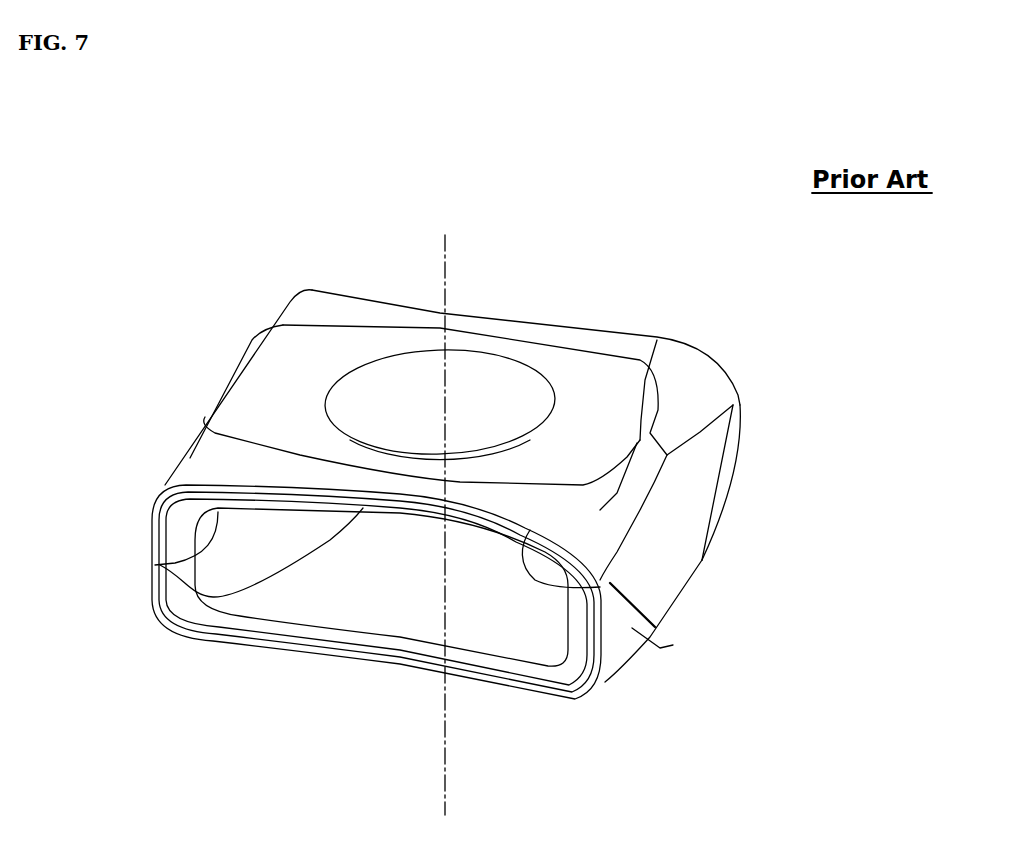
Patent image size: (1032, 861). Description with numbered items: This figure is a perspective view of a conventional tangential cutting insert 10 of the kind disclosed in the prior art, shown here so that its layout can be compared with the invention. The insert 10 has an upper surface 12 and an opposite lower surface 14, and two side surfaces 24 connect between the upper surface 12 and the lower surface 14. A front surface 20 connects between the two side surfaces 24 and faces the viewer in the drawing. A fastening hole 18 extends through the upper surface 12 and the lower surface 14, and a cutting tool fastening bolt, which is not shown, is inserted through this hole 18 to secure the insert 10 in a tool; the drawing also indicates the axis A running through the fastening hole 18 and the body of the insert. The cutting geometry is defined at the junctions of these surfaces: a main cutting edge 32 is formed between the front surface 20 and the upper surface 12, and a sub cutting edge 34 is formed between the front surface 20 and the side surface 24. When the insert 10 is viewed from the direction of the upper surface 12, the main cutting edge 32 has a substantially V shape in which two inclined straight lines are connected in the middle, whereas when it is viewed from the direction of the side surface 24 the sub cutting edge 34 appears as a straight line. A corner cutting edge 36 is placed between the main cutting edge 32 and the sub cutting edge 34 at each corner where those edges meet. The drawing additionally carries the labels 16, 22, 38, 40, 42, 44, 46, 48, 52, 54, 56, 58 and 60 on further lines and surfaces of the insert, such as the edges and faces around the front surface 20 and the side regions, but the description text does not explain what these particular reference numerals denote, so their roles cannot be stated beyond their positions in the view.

The tangential cutting insert 10 is at (561, 184).
The upper surface 12 is at (267, 346).
The lower surface 14 is at (539, 710).
The side face 16 is at (657, 340).
The fastening hole 18 is at (400, 388).
The front surface 20 is at (280, 604).
The rake surface 22 is at (548, 316).
The side surface 24 is at (158, 443).
The main cutting edge 32 is at (199, 478).
The sub cutting edge 34 is at (152, 532).
The corner cutting edge 36 is at (158, 492).
The lower edge 38 is at (313, 633).
The inner edge 40 is at (357, 617).
The edge line 42 is at (162, 563).
The inner edge line 44 is at (213, 588).
The chip breaker boundary 46 is at (234, 452).
The edge land 48 is at (250, 372).
The bottom edge 52 is at (403, 660).
The bottom edge segment 54 is at (483, 673).
The corner surface 56 is at (722, 505).
The corner notch 58 is at (600, 650).
The corner edge line 60 is at (697, 503).
The axis A is at (447, 262).